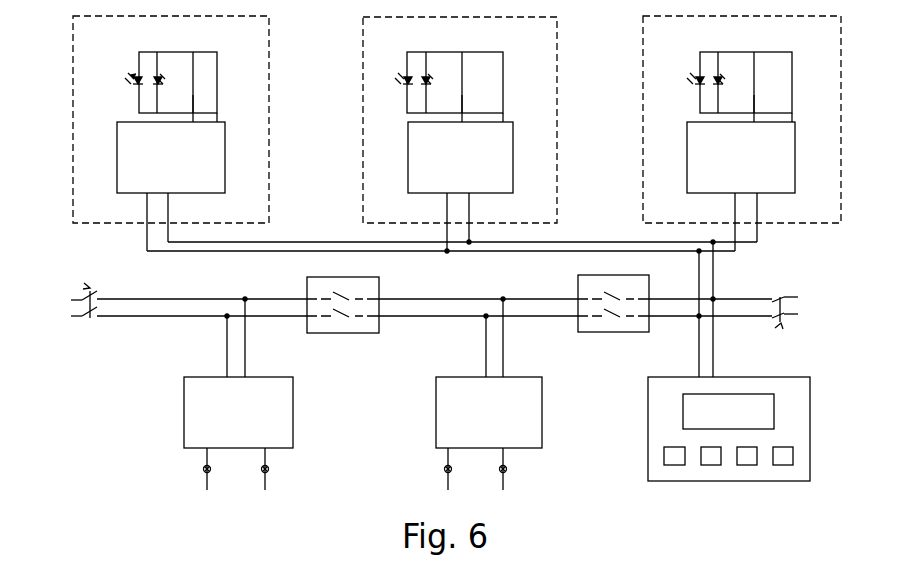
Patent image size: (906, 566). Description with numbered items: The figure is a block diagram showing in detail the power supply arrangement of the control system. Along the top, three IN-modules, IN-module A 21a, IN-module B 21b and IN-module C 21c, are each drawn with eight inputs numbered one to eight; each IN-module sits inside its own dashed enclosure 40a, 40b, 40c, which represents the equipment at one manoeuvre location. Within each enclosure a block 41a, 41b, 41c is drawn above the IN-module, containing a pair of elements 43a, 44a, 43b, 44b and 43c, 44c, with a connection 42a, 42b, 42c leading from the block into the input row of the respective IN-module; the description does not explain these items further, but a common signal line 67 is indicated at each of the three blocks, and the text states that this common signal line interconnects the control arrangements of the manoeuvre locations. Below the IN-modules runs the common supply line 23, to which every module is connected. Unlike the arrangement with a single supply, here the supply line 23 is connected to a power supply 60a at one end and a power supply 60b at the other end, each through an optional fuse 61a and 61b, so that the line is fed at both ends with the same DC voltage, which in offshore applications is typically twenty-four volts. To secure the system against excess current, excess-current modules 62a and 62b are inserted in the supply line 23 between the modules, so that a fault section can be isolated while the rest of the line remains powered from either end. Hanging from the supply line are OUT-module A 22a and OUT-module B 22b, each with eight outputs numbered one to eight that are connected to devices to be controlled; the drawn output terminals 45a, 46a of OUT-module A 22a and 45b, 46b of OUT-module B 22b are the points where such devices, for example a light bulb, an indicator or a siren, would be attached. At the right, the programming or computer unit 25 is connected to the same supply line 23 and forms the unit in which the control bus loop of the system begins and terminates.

The sensor unit A 40a is at (73, 103).
The sensor unit B 40b is at (363, 103).
The sensor unit C 40c is at (643, 103).
The sensor A 41a is at (203, 46).
The sensor B 41b is at (493, 44).
The sensor C 41c is at (769, 46).
The sensor output line A 42a is at (193, 104).
The sensor output line B 42b is at (462, 105).
The sensor output line C 42c is at (754, 100).
The light emitting diode A 43a is at (137, 78).
The light emitting diode B 43b is at (407, 78).
The light emitting diode C 43c is at (699, 78).
The light receiving diode A 44a is at (158, 82).
The light receiving diode B 44b is at (427, 82).
The light receiving diode C 44c is at (719, 82).
The common signal line 67 is at (217, 77).
The IN-module A 21a is at (220, 145).
The IN-module B 21b is at (508, 145).
The IN-module C 21c is at (792, 145).
The OUT-module A 22a is at (188, 421).
The OUT-module B 22b is at (440, 419).
The supply line 23 is at (433, 316).
The programming unit 25 is at (729, 472).
The output terminal A 45a is at (203, 470).
The output terminal B 45b is at (444, 470).
The output terminal A 46a is at (283, 470).
The output terminal B 46b is at (499, 470).
The power supply 60a is at (40, 319).
The power supply 60b is at (829, 320).
The fuse 61a is at (94, 318).
The fuse 61b is at (778, 291).
The excess-current module 62a is at (337, 333).
The excess-current module 62b is at (607, 332).